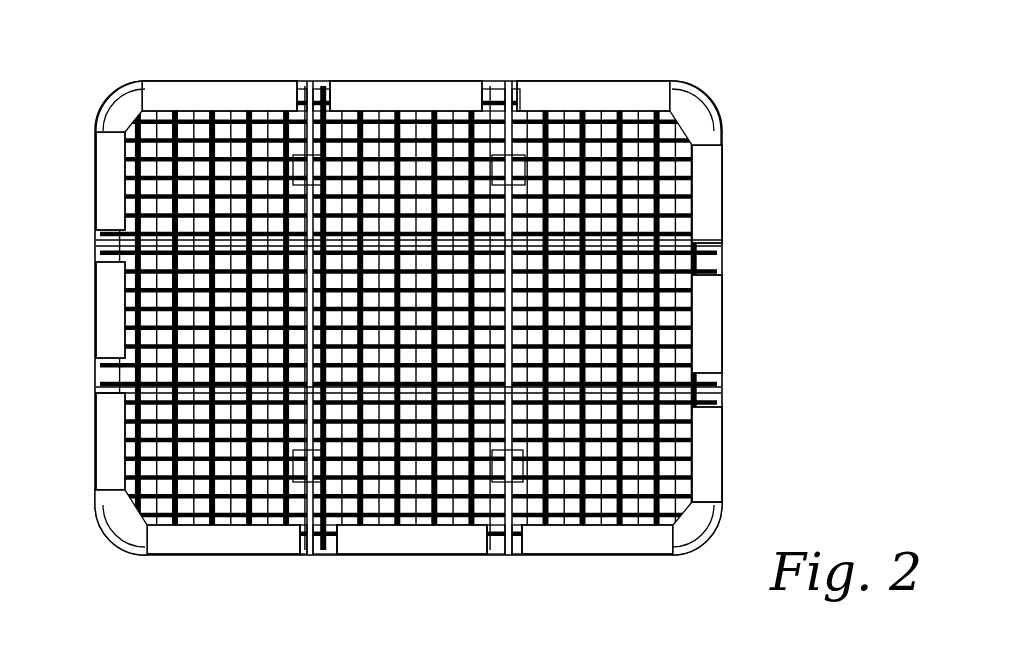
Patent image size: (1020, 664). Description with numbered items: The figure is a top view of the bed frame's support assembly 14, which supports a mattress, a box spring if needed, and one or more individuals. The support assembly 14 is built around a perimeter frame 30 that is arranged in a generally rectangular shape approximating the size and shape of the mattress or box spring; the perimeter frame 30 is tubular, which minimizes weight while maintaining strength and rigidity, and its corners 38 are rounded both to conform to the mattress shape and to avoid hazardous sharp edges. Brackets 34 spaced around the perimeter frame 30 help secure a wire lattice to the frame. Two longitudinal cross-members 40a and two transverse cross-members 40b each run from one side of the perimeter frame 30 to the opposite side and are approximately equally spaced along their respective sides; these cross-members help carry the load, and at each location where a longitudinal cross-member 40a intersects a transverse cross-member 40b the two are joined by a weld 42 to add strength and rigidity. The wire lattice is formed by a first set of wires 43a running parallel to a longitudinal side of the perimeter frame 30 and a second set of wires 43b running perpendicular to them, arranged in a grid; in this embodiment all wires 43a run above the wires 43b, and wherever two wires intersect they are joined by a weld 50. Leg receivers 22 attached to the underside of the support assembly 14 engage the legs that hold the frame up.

The support assembly 14 is at (130, 82).
The leg receiver 22 is at (297, 482).
The perimeter frame 30 is at (318, 80).
The brackets 34 is at (574, 82).
The corners 38 is at (718, 86).
The longitudinal cross-members 40a is at (655, 240).
The transverse cross-members 40b is at (298, 135).
The weld 42 is at (307, 243).
The wire 43a is at (464, 140).
The wire 43b is at (396, 150).
The weld 50 is at (645, 475).